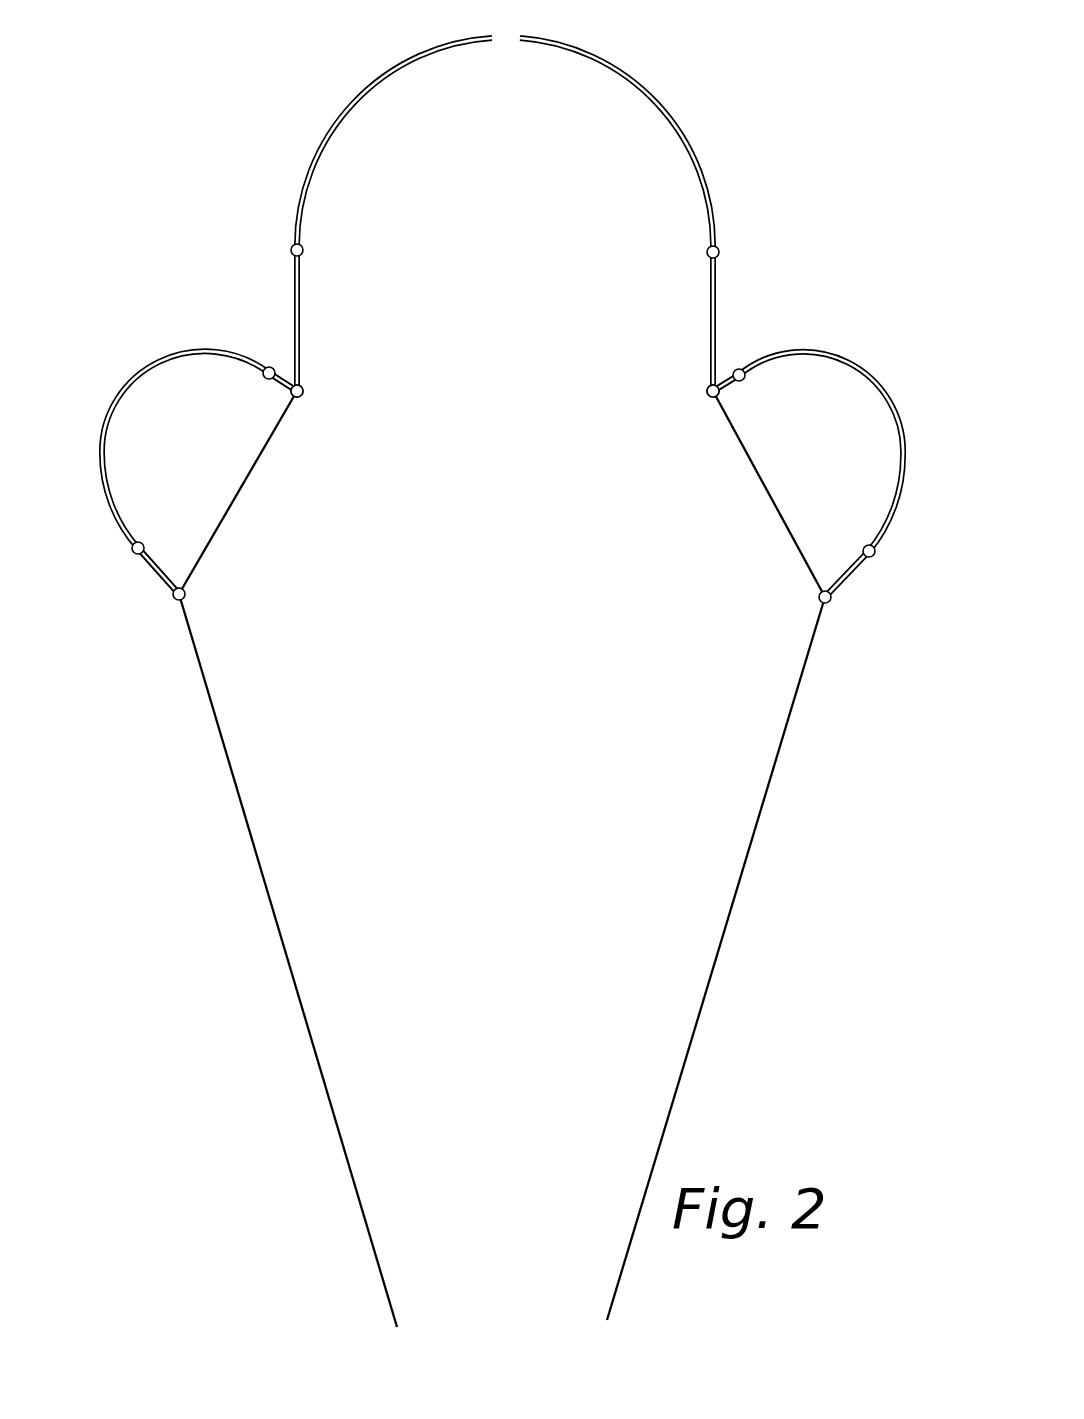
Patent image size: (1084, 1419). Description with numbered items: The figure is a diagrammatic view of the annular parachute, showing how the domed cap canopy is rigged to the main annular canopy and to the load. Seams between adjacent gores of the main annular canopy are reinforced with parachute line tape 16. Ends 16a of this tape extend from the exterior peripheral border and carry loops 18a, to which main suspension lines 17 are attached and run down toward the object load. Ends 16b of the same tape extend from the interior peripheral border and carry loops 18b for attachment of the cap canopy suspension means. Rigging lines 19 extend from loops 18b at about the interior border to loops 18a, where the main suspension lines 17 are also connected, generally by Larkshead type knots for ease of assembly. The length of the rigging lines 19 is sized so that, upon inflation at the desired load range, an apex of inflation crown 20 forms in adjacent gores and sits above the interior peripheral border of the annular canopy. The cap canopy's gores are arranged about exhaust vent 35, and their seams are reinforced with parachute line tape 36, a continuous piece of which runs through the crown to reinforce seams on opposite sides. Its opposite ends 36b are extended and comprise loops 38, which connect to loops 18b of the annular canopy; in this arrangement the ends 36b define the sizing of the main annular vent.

The parachute line tape 16 is at (127, 400).
The ends of parachute line tape 16a is at (154, 577).
The ends of parachute line tape 16b is at (279, 368).
The main suspension lines 17 is at (240, 793).
The loops 18a is at (186, 594).
The loops 18b is at (302, 397).
The rigging lines 19 is at (243, 487).
The inflation crown 20 is at (217, 360).
The exhaust vent 35 is at (511, 27).
The parachute line tape 36 is at (352, 100).
The ends of parachute line tape 36b is at (306, 280).
The loops 38 is at (303, 390).